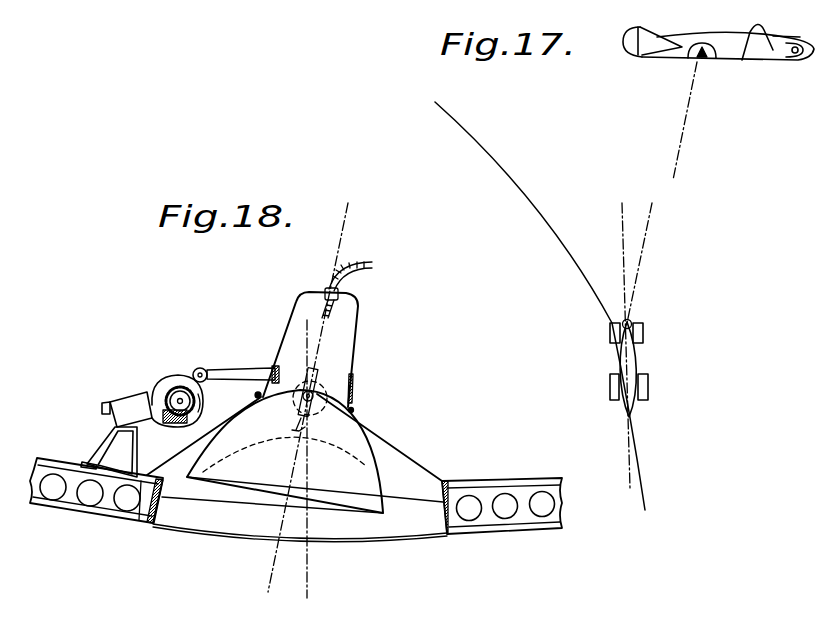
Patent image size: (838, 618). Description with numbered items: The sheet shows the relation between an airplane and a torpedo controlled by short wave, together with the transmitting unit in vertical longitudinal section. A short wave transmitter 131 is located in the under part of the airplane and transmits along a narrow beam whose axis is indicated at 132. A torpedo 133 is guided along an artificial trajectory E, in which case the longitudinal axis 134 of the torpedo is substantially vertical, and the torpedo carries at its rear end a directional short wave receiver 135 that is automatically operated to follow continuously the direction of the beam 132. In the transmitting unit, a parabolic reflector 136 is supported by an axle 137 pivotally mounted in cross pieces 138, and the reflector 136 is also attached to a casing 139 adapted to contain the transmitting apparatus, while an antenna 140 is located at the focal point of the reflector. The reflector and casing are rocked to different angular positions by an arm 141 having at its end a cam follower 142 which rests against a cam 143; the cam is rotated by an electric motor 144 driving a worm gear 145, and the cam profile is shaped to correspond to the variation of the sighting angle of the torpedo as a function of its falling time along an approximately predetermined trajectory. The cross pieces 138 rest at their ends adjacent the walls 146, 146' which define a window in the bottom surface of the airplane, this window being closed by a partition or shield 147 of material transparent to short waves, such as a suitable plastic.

In FIG. 17, the short wave transmitter 131 is at (701, 60).
In FIG. 17, the axis of the beam 132 is at (677, 165).
In FIG. 18, the axis of the beam 132 is at (271, 572).
In FIG. 17, the torpedo 133 is at (638, 367).
In FIG. 17, the longitudinal axis of the torpedo 134 is at (621, 233).
In FIG. 17, the directional short wave receiver 135 is at (632, 322).
In FIG. 17, the artificial trajectory E is at (533, 200).
In FIG. 18, the parabolic reflector 136 is at (390, 510).
In FIG. 18, the axle 137 is at (325, 387).
In FIG. 18, the cross pieces 138 is at (386, 443).
In FIG. 18, the casing 139 is at (347, 317).
In FIG. 18, the antenna 140 is at (338, 426).
In FIG. 18, the arm 141 is at (232, 369).
In FIG. 18, the cam follower 142 is at (199, 368).
In FIG. 18, the cam 143 is at (153, 383).
In FIG. 18, the electric motor 144 is at (120, 402).
In FIG. 18, the worm gear 145 is at (172, 425).
In FIG. 18, the wall 146 is at (100, 515).
In FIG. 18, the wall 146' is at (502, 524).
In FIG. 18, the partition or shield 147 is at (200, 531).